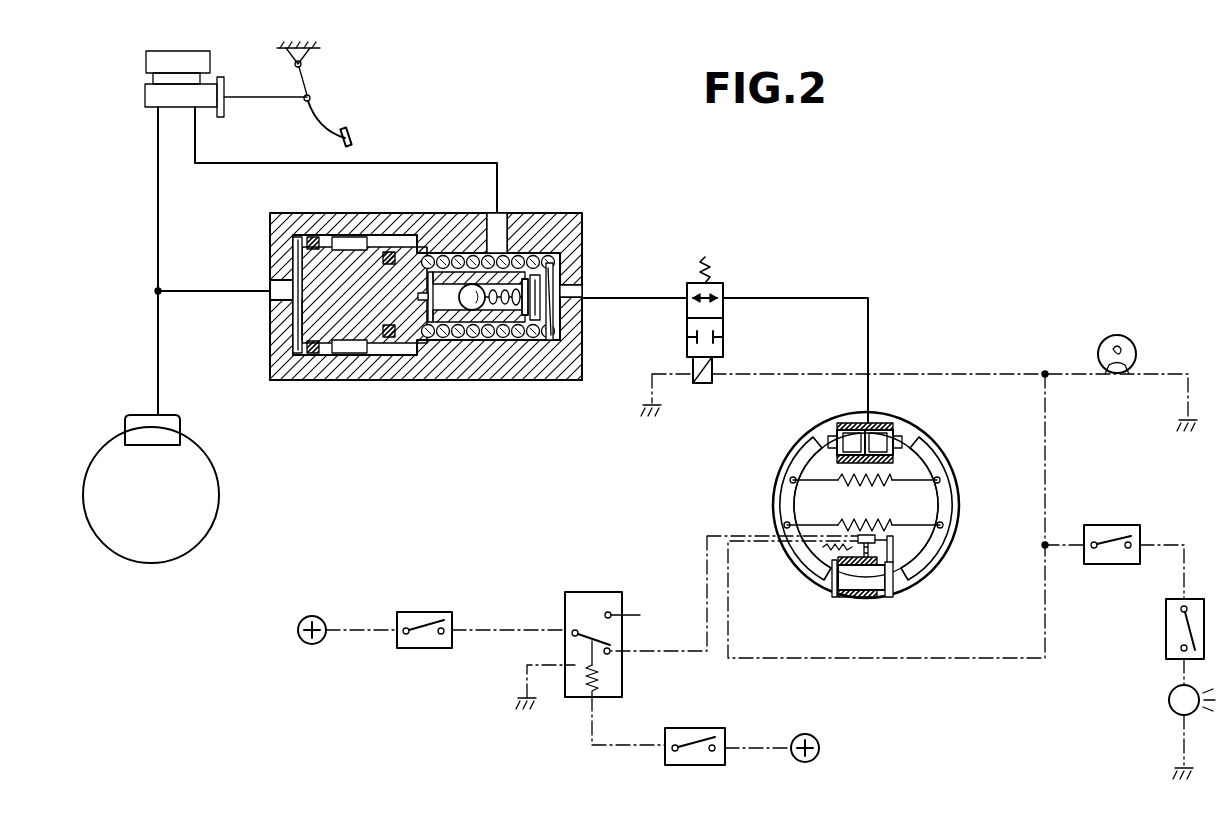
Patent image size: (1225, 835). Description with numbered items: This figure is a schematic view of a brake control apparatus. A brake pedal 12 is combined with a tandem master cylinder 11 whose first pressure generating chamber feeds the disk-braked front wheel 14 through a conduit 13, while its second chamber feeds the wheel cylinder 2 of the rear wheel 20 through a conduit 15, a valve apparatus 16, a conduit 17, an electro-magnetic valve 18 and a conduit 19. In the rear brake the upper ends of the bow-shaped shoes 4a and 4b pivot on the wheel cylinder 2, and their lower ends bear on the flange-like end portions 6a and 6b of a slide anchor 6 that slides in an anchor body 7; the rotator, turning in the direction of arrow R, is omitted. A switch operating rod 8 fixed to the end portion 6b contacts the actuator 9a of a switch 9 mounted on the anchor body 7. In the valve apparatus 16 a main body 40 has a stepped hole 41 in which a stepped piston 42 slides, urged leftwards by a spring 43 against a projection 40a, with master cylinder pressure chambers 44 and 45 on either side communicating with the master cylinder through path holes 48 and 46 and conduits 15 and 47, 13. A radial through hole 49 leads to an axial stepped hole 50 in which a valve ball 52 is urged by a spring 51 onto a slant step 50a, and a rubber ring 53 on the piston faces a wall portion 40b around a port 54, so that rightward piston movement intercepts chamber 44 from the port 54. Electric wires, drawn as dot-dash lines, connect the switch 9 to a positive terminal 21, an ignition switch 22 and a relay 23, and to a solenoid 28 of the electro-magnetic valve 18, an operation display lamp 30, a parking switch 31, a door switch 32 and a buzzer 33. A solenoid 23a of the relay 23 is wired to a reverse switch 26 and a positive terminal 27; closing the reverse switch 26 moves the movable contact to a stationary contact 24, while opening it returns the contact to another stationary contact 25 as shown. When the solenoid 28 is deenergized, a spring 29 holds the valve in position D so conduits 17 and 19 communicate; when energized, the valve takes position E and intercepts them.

The wheel cylinder 2 is at (846, 423).
The bow-shaped shoe 4a is at (784, 506).
The bow-shaped shoe 4b is at (936, 468).
The slide anchor 6 is at (862, 580).
The end portion 6a is at (832, 590).
The end portion 6b is at (891, 598).
The anchor body 7 is at (849, 598).
The switch operating rod 8 is at (893, 550).
The switch 9 is at (864, 534).
The actuator 9a is at (886, 537).
The tandem master cylinder 11 is at (140, 76).
The brake pedal 12 is at (320, 122).
The conduit 13 is at (156, 193).
The front wheel 14 is at (198, 438).
The conduit 15 is at (400, 162).
The valve apparatus 16 is at (570, 212).
The conduit 17 is at (660, 297).
The electro-magnetic valve 18 is at (719, 284).
The conduit 19 is at (869, 403).
The rear wheel 20 is at (928, 434).
The positive terminal 21 is at (312, 615).
The ignition switch 22 is at (405, 611).
The relay 23 is at (601, 591).
The solenoid 23a is at (582, 680).
The stationary contact 24 is at (640, 615).
The stationary contact 25 is at (610, 653).
The reverse switch 26 is at (690, 727).
The positive terminal 27 is at (805, 733).
The solenoid 28 is at (704, 384).
The spring 29 is at (706, 256).
The operation display lamp 30 is at (1126, 337).
The parking switch 31 is at (1090, 524).
The door switch 32 is at (1166, 631).
The buzzer 33 is at (1168, 699).
The main body 40 is at (382, 256).
The projection 40a is at (290, 234).
The wall portion 40b is at (576, 266).
The stepped hole 41 is at (314, 354).
The stepped piston 42 is at (389, 338).
The spring 43 is at (520, 252).
The master cylinder pressure chamber 44 is at (560, 381).
The master cylinder pressure chamber 45 is at (298, 340).
The path hole 46 is at (292, 300).
The conduit 47 is at (206, 290).
The path hole 48 is at (500, 226).
The radial through hole 49 is at (437, 323).
The axial stepped hole 50 is at (473, 311).
The slant step 50a is at (442, 262).
The spring 51 is at (572, 294).
The valve ball 52 is at (516, 323).
The rubber ring 53 is at (554, 331).
The port 54 is at (561, 311).
The position D is at (724, 292).
The position E is at (724, 336).
The arrow R is at (750, 477).